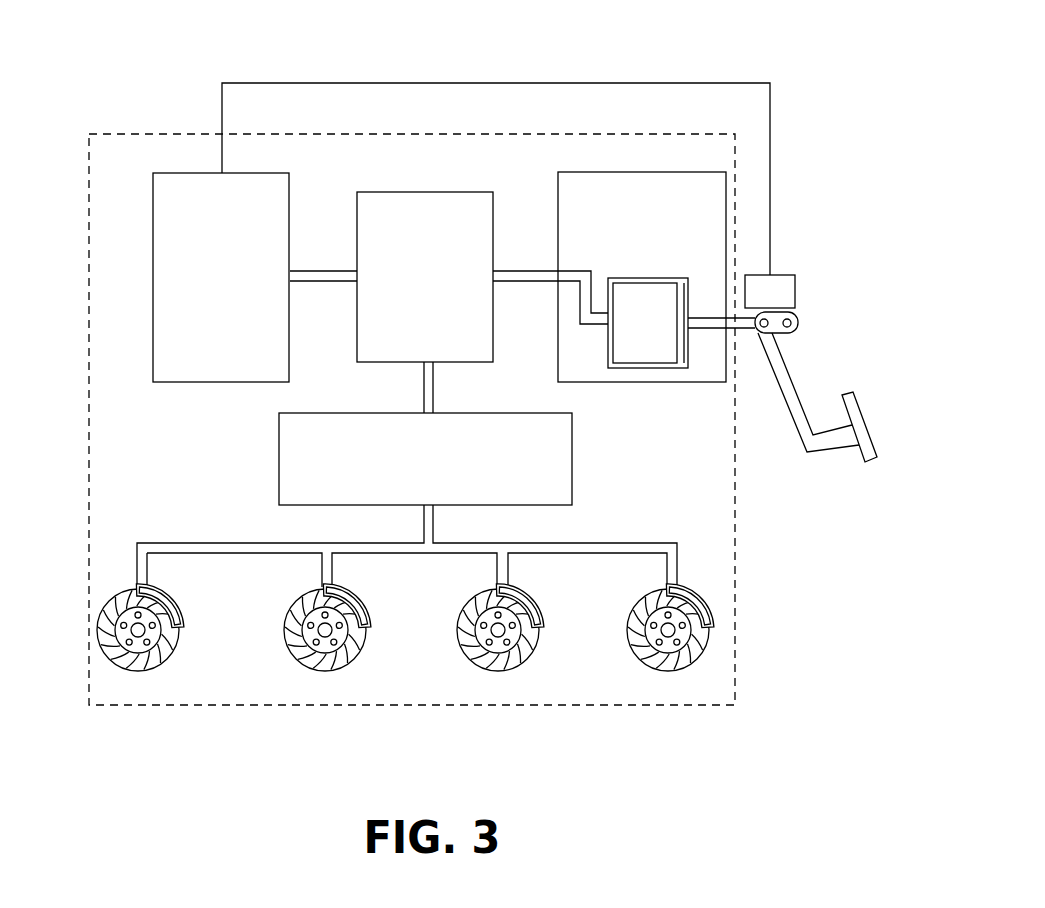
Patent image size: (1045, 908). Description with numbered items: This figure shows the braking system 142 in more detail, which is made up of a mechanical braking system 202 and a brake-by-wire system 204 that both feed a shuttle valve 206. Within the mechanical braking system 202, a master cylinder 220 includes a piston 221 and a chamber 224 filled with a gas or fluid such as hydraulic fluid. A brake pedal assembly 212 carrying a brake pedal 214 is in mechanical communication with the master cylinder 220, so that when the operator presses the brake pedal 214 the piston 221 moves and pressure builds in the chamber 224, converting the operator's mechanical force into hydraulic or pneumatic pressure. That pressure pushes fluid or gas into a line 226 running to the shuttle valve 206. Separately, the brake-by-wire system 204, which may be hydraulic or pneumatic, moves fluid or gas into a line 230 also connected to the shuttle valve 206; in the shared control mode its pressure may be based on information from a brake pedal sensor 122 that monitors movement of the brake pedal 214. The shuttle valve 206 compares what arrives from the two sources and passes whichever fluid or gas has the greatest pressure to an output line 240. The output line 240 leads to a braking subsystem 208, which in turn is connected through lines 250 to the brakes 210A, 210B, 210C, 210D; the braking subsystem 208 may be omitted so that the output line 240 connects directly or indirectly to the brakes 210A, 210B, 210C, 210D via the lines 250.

The braking system 142 is at (128, 133).
The mechanical braking system 202 is at (727, 192).
The brake-by-wire system 204 is at (153, 350).
The shuttle valve 206 is at (404, 212).
The braking subsystem 208 is at (290, 476).
The brake 210A is at (138, 671).
The brake 210B is at (325, 671).
The brake 210C is at (498, 671).
The brake 210D is at (668, 671).
The brake pedal sensor 122 is at (786, 293).
The brake pedal assembly 212 is at (786, 367).
The brake pedal 214 is at (858, 401).
The master cylinder 220 is at (641, 368).
The piston 221 is at (685, 345).
The chamber 224 is at (622, 347).
The line 226 is at (512, 271).
The line 230 is at (305, 271).
The output line 240 is at (422, 370).
The lines 250 is at (433, 522).